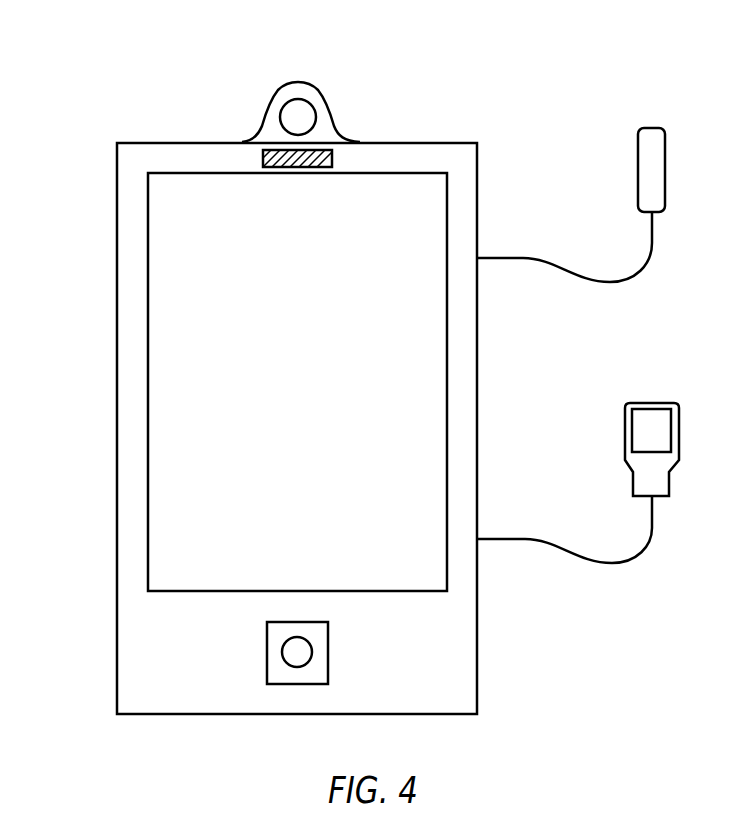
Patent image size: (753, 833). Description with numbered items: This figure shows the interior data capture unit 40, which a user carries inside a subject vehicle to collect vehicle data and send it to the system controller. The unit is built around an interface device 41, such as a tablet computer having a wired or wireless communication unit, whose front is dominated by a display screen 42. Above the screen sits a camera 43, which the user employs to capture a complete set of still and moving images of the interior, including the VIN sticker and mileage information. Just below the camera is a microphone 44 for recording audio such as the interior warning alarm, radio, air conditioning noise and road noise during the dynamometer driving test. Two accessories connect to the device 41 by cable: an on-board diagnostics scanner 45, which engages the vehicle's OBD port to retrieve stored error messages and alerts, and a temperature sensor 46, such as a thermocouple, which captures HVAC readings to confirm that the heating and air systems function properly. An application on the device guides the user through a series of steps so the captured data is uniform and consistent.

The interior data capture unit 40 is at (112, 62).
The interface device 41 is at (117, 391).
The display screen 42 is at (275, 381).
The camera 43 is at (333, 112).
The microphone 44 is at (270, 150).
The on-board diagnostics (OBD) scanner 45 is at (630, 563).
The temperature sensor 46 is at (630, 281).